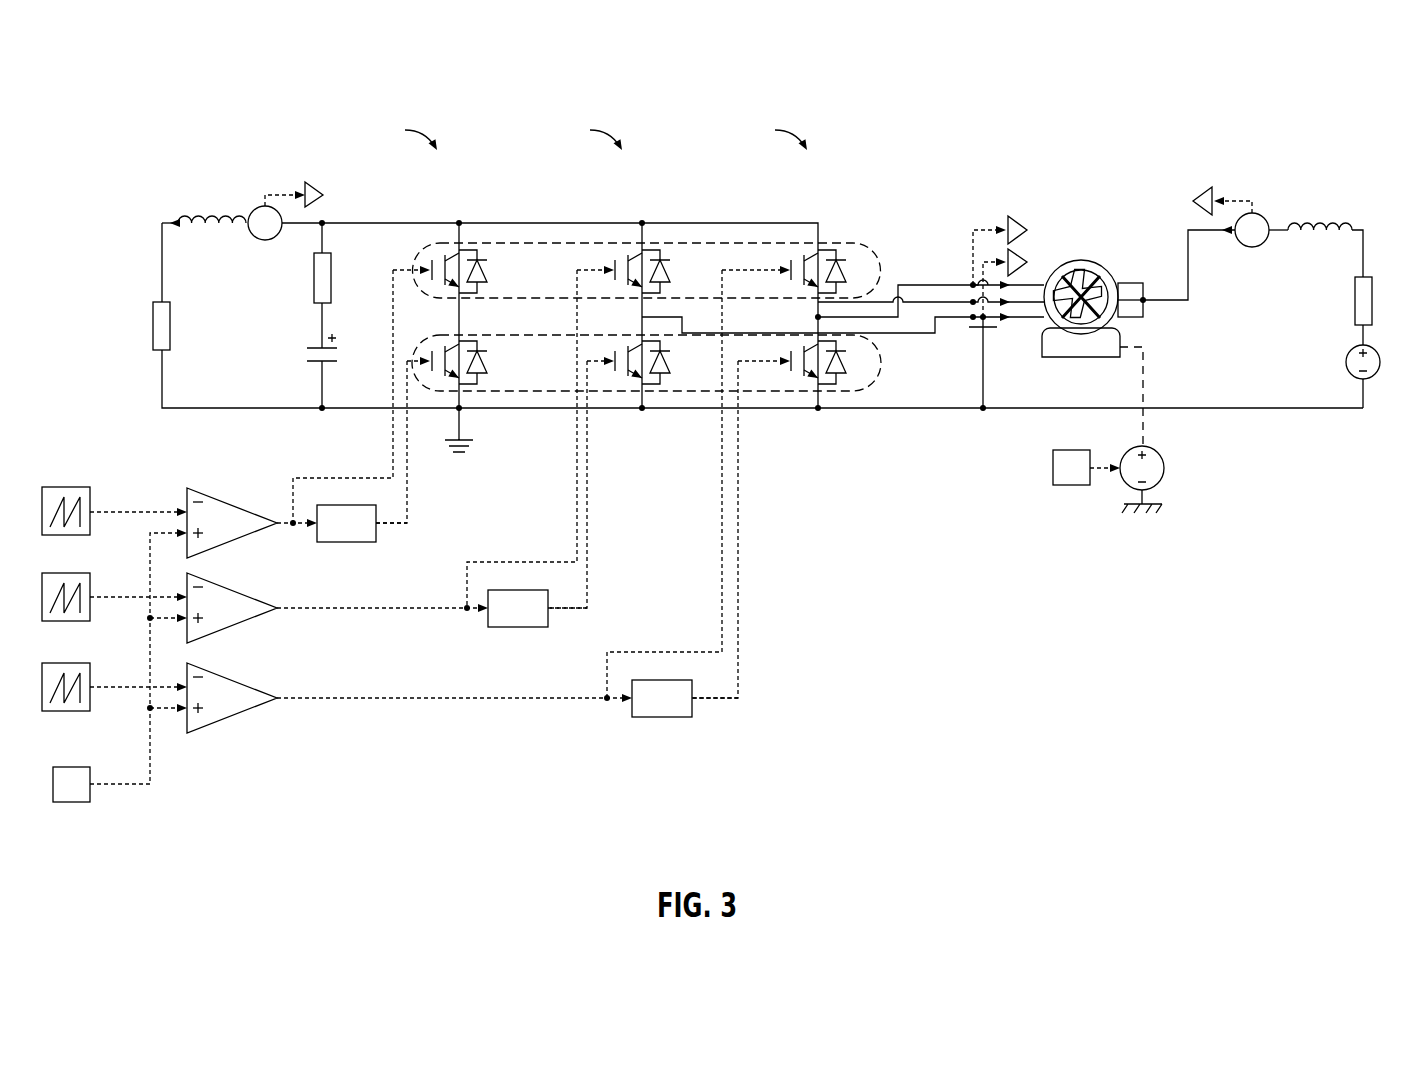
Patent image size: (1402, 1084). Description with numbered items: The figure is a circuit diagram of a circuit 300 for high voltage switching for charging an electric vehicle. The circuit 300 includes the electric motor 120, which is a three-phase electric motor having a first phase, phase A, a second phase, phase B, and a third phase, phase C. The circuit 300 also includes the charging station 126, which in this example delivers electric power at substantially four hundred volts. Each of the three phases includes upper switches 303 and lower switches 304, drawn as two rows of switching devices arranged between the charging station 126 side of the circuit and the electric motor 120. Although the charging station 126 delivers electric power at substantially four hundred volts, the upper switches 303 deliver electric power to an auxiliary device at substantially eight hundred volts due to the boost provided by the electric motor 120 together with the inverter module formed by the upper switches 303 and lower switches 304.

The circuit 300 is at (701, 440).
The upper switches 303 is at (845, 242).
The lower switches 304 is at (880, 364).
The electric motor 120 is at (1095, 262).
The charging station 126 is at (1363, 382).